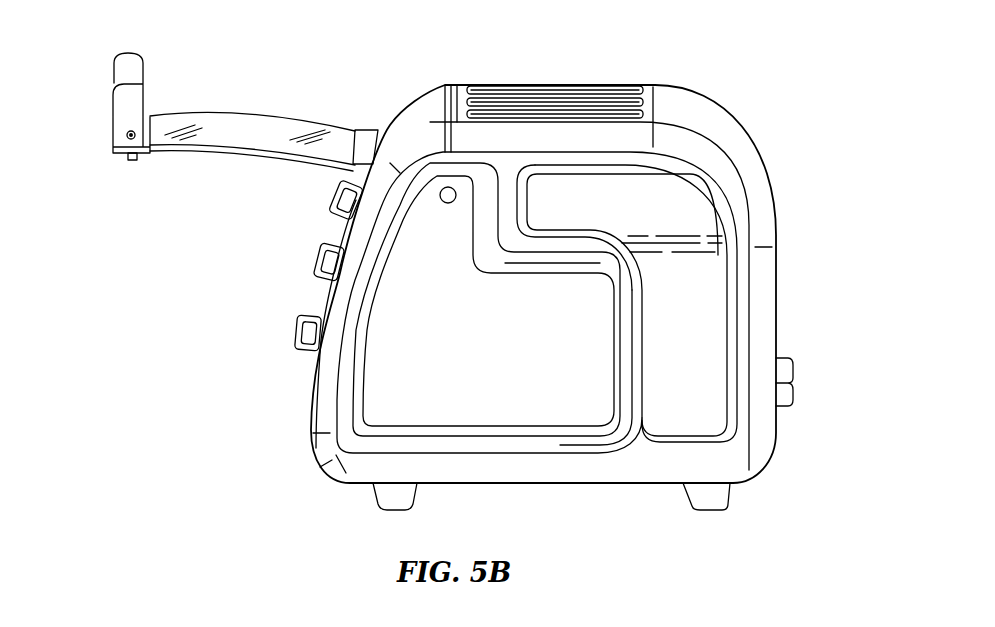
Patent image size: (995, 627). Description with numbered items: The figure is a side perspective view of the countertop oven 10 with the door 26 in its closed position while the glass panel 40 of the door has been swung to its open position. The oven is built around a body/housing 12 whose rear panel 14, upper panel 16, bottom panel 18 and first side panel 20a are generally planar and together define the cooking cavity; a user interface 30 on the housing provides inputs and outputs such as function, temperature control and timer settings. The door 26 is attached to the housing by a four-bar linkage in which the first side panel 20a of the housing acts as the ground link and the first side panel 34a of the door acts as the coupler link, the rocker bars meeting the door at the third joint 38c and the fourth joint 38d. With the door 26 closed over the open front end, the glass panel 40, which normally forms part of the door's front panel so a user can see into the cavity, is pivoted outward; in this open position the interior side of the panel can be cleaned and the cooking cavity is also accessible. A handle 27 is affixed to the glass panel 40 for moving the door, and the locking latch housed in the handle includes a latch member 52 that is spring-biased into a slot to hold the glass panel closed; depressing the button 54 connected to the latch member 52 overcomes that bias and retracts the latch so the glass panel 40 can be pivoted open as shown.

The countertop oven 10 is at (456, 272).
The body/housing 12 is at (549, 299).
The rear panel 14 is at (777, 318).
The upper panel 16 is at (530, 83).
The bottom panel 18 is at (493, 488).
The first side panel of the housing 20a is at (703, 327).
The door 26 is at (339, 238).
The handle 27 is at (97, 113).
The user interface 30 is at (332, 193).
The first side panel of the door 34a is at (530, 393).
The third joint 38c is at (320, 452).
The fourth joint 38d is at (447, 187).
The glass panel 40 is at (247, 115).
The latch member 52 is at (132, 162).
The button 54 is at (127, 137).